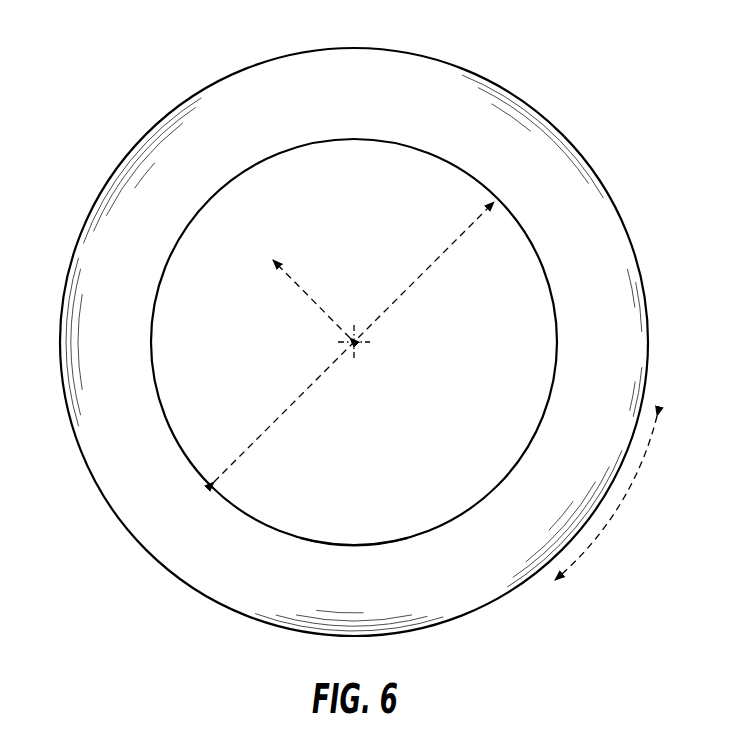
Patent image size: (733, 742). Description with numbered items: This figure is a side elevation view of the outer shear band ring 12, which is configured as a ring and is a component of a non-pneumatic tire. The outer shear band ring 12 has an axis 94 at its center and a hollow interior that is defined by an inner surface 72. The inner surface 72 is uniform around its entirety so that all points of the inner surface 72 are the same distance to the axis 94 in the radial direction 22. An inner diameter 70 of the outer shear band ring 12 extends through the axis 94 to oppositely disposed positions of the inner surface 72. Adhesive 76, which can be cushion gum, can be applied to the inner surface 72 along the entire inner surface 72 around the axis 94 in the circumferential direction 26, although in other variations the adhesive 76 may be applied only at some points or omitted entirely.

The outer shear band ring 12 is at (104, 71).
The radial direction 22 is at (304, 289).
The circumferential direction 26 is at (618, 508).
The inner diameter 70 is at (287, 412).
The inner surface 72 is at (352, 541).
The adhesive 76 is at (480, 500).
The axis 94 is at (357, 346).